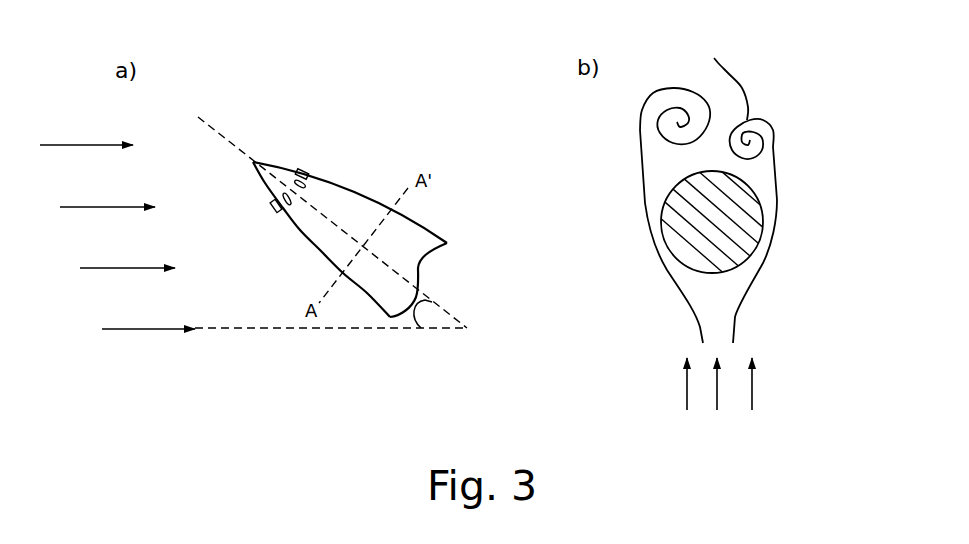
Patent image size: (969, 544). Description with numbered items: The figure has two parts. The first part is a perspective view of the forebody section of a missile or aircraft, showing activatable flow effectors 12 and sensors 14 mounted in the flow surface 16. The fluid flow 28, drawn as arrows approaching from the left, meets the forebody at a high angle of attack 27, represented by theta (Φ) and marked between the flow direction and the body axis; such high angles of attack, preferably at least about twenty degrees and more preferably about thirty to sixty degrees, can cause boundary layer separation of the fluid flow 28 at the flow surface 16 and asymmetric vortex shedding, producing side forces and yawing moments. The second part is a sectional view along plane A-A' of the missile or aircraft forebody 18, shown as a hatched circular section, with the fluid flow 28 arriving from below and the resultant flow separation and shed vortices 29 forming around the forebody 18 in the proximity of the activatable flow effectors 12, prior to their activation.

The activatable flow effectors 12 is at (303, 171).
The sensors 14 is at (306, 183).
The flow surface 16 is at (340, 207).
The missile or aircraft forebody 18 is at (738, 225).
The angle of attack 27 is at (425, 328).
The fluid flow 28 is at (117, 268).
The vortex 29 is at (708, 108).